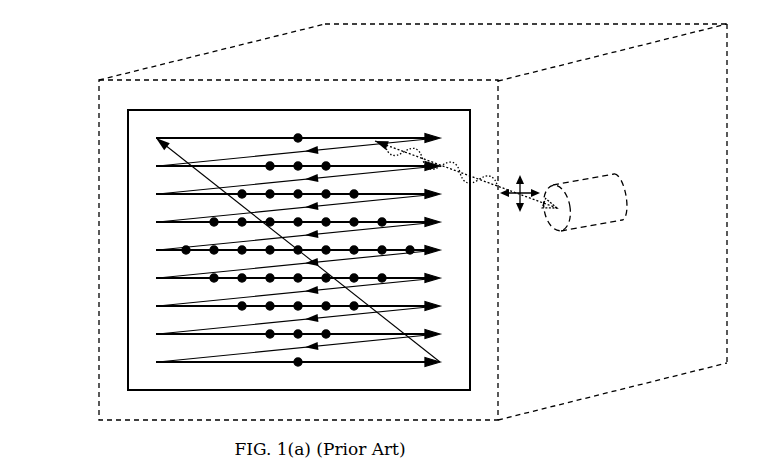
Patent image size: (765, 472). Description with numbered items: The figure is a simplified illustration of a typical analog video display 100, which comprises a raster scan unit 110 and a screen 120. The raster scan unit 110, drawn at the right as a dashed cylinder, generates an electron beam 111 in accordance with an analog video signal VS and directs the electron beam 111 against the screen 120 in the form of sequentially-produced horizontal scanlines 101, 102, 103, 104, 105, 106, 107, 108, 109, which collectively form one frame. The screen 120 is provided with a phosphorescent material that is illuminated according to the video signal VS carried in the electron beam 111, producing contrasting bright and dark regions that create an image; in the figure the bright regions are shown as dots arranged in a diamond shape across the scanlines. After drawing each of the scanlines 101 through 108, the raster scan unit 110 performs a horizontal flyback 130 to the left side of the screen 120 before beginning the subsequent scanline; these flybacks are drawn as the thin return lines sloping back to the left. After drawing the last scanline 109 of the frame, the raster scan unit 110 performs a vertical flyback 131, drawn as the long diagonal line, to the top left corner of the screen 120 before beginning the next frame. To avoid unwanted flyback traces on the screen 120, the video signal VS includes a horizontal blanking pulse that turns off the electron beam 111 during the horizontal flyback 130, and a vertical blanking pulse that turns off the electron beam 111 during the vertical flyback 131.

The analog video display 100 is at (137, 42).
The horizontal scanline 101 is at (197, 138).
The horizontal scanline 102 is at (184, 166).
The horizontal scanline 103 is at (184, 194).
The horizontal scanline 104 is at (184, 222).
The horizontal scanline 105 is at (184, 250).
The horizontal scanline 106 is at (184, 278).
The horizontal scanline 107 is at (184, 306).
The horizontal scanline 108 is at (184, 334).
The horizontal scanline 109 is at (184, 362).
The raster scan unit 110 is at (598, 172).
The electron beam 111 is at (492, 182).
The screen 120 is at (388, 110).
The horizontal flyback 130 is at (370, 201).
The vertical flyback 131 is at (400, 330).
The analog video signal VS is at (470, 177).